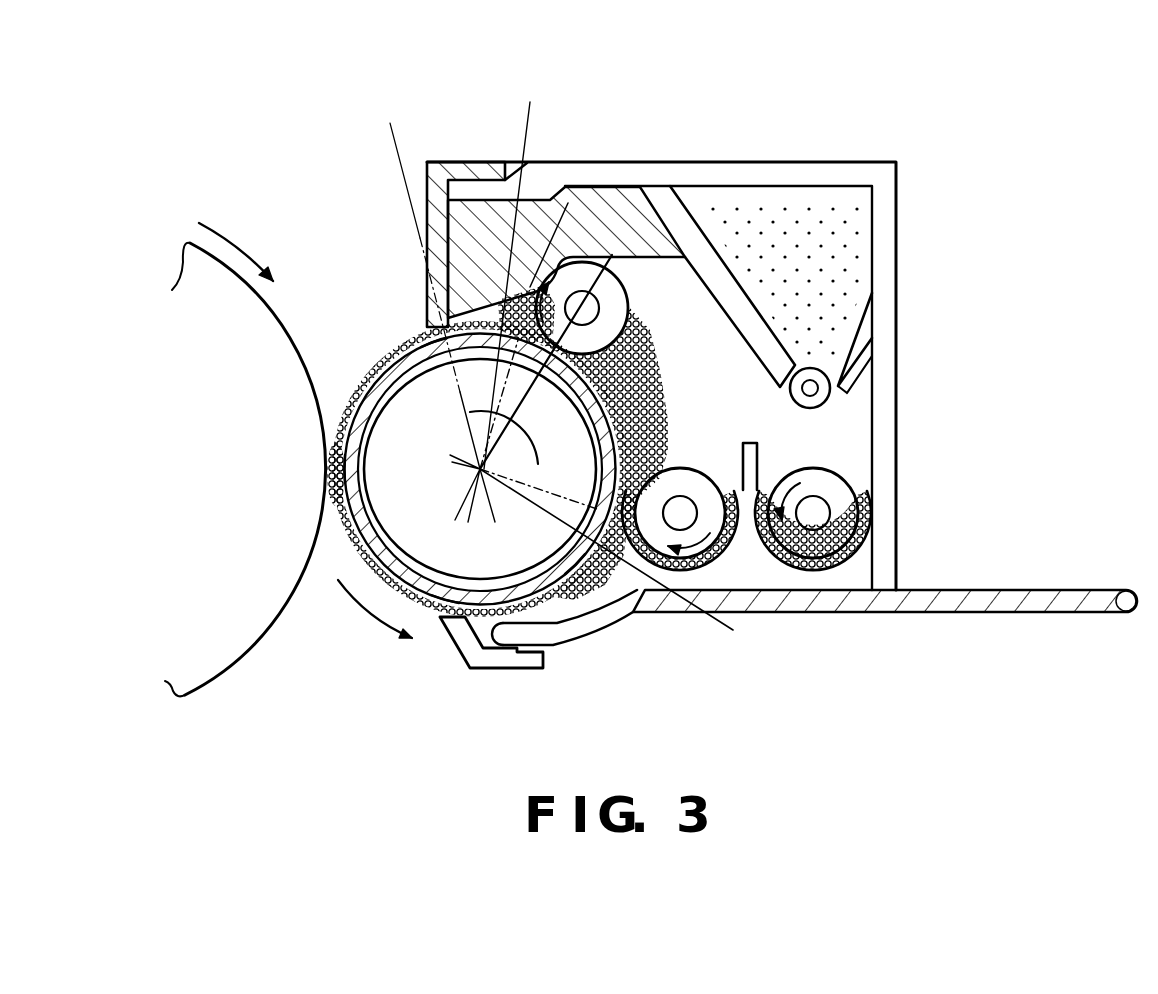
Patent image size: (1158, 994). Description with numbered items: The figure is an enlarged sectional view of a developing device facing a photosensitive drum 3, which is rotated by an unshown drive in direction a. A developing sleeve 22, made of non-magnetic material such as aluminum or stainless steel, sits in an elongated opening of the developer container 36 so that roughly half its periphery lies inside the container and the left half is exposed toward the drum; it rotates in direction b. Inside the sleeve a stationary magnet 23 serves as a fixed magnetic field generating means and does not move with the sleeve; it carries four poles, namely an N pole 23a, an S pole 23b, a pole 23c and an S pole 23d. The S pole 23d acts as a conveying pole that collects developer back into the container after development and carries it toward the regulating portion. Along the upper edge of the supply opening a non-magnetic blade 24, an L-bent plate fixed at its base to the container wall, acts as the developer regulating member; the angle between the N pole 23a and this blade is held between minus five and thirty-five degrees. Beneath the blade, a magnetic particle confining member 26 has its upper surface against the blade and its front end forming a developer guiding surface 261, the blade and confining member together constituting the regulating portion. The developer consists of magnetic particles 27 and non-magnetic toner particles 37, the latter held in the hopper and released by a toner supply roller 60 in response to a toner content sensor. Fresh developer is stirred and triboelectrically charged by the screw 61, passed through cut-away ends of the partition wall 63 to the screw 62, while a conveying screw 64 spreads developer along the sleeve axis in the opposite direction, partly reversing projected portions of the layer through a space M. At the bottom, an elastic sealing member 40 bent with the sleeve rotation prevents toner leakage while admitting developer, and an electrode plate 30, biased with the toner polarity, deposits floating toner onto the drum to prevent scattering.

The photosensitive drum 3 is at (270, 620).
The developing sleeve 22 is at (397, 357).
The stationary magnet 23 is at (392, 520).
The N pole 23a is at (440, 362).
The S pole 23b is at (325, 474).
The L pole 23c is at (435, 578).
The S pole 23d is at (600, 590).
The non-magnetic blade 24 is at (427, 186).
The magnetic particle confining member 26 is at (622, 192).
The developer guiding surface 261 is at (535, 176).
The magnetic particles 27 is at (368, 378).
The electrode plate 30 is at (503, 665).
The developer container 36 is at (843, 177).
The non-magnetic toner particles 37 is at (840, 277).
The sealing member 40 is at (553, 600).
The toner supply roller 60 is at (836, 402).
The screw 61 is at (850, 518).
The screw 62 is at (733, 550).
The partition wall 63 is at (760, 449).
The conveying screw 64 is at (612, 317).
The space M is at (687, 287).